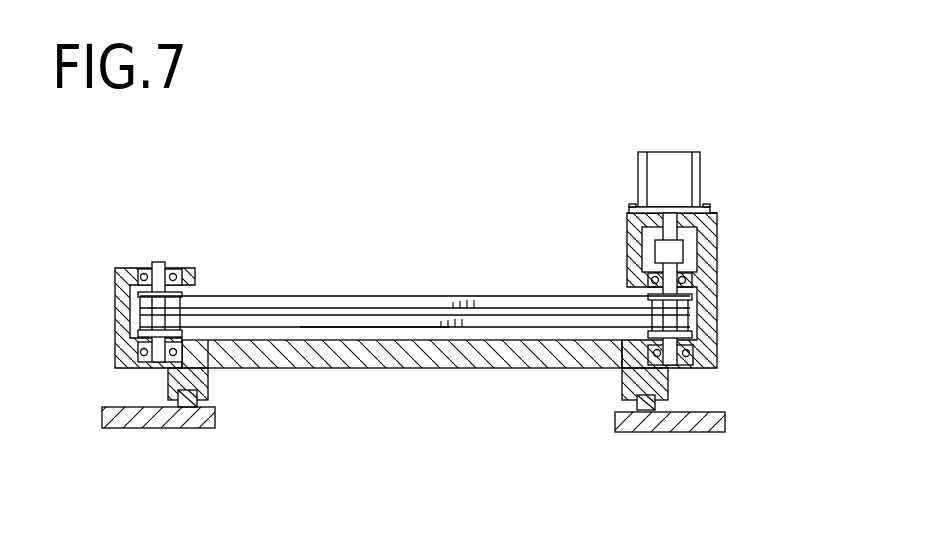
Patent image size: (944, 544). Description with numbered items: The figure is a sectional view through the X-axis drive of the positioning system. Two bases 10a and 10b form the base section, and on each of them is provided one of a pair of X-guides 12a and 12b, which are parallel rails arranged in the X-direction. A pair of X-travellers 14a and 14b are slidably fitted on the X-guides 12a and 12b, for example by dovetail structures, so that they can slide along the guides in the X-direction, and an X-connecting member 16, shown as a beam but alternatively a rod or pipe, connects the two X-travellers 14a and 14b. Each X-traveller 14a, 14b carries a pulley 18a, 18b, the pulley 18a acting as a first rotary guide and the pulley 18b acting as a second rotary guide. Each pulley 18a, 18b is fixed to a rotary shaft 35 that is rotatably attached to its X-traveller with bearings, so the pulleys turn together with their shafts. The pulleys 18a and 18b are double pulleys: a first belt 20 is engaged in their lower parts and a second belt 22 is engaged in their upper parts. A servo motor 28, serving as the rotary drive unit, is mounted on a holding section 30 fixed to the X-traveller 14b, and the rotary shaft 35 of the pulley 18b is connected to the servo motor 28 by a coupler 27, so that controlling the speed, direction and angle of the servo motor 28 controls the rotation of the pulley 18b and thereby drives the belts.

The base 10a is at (133, 420).
The base 10b is at (717, 427).
The X-guide 12a is at (188, 403).
The X-guide 12b is at (643, 432).
The X-traveller 14a is at (120, 353).
The X-traveller 14b is at (668, 385).
The X-connecting member 16 is at (453, 365).
The pulley 18a is at (145, 312).
The pulley 18b is at (690, 316).
The first belt 20 is at (367, 328).
The second belt 22 is at (352, 302).
The coupler 27 is at (672, 255).
The servo motor 28 is at (683, 185).
The holding section 30 is at (707, 237).
The rotary shaft 35 is at (158, 262).